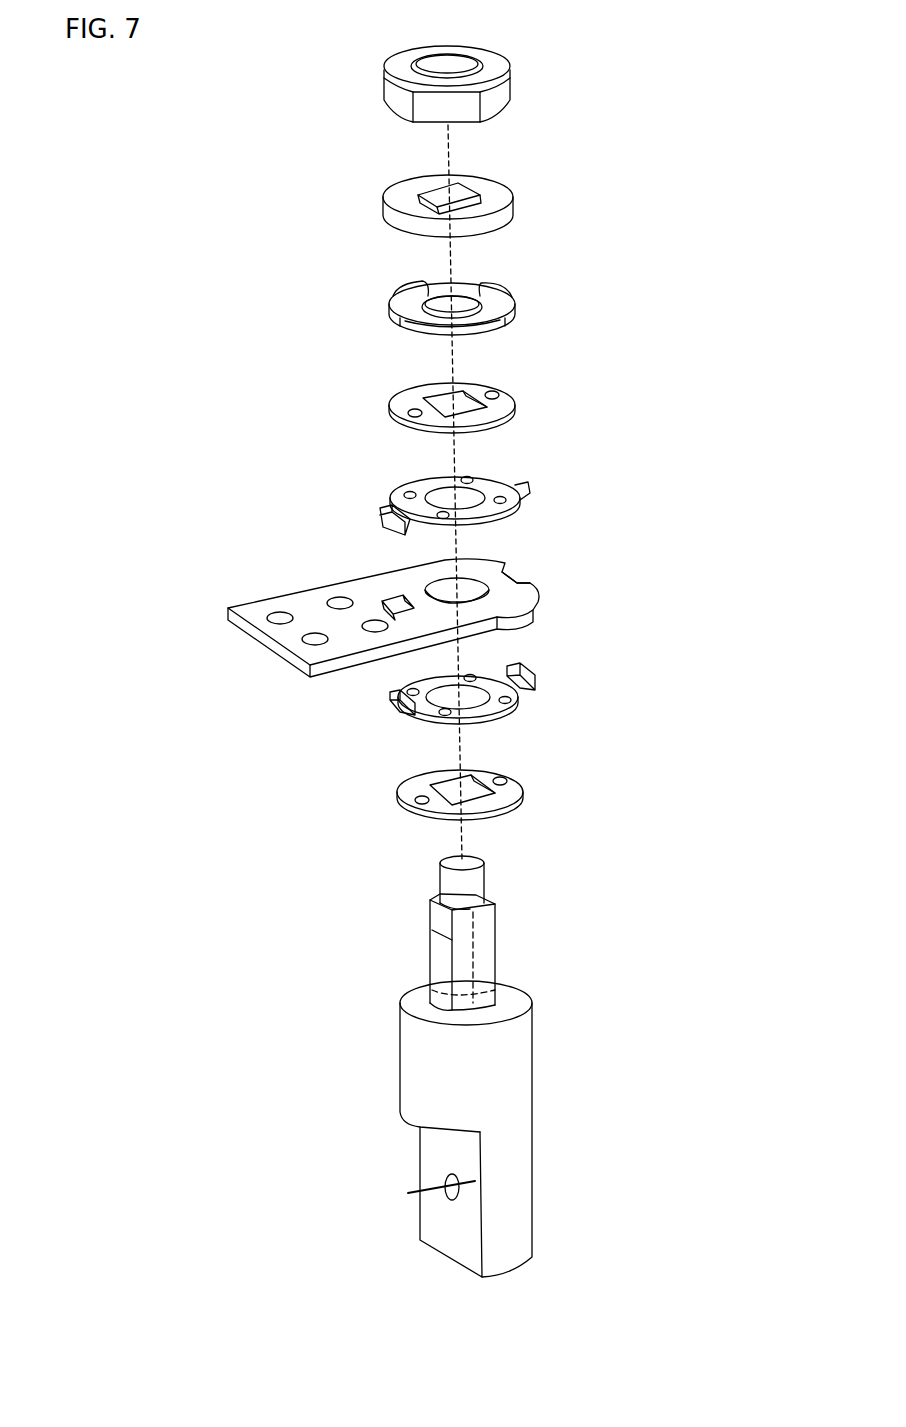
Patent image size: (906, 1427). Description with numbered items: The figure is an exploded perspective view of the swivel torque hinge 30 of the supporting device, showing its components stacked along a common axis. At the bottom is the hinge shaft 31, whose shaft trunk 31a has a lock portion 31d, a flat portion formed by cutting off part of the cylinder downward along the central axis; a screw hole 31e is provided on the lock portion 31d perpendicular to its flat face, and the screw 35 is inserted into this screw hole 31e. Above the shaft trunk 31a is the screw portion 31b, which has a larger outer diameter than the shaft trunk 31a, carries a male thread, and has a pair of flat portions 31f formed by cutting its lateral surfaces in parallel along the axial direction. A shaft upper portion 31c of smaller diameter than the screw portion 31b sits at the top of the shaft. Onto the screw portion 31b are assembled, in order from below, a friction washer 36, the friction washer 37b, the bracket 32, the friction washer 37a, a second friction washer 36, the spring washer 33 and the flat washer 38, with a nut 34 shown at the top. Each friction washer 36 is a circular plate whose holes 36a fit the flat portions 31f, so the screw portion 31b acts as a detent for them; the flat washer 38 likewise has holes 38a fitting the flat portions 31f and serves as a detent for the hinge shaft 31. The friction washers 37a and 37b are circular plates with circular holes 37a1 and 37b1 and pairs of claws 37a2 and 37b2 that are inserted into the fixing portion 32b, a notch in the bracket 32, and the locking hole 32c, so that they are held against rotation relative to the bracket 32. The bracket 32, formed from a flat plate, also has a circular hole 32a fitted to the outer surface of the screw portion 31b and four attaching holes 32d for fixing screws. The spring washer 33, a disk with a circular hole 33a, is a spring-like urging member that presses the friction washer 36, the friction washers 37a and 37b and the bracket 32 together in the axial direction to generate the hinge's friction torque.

The swivel torque hinge 30 is at (662, 245).
The hinge shaft 31 is at (493, 1073).
The shaft trunk 31a is at (507, 1063).
The screw portion 31b is at (488, 964).
The shaft upper portion 31c is at (476, 886).
The lock portion 31d is at (465, 1238).
The screw hole 31e is at (440, 1175).
The flat portions 31f is at (485, 929).
The bracket 32 is at (542, 607).
The circular hole 32a is at (432, 592).
The fixing portion 32b is at (517, 578).
The locking hole 32c is at (382, 602).
The attaching holes 32d is at (307, 641).
The spring washer 33 is at (518, 311).
The circular hole 33a is at (407, 320).
The nut 34 is at (507, 73).
The screw 35 is at (433, 1200).
The friction washer 36 is at (522, 411).
The holes 36a is at (427, 801).
The friction washer 37a is at (507, 482).
The circular hole 37a1 is at (423, 488).
The claws 37a2 is at (383, 518).
The friction washer 37b is at (520, 713).
The circular hole 37b1 is at (420, 718).
The claws 37b2 is at (523, 665).
The flat washer 38 is at (512, 194).
The square hole 38a is at (420, 198).